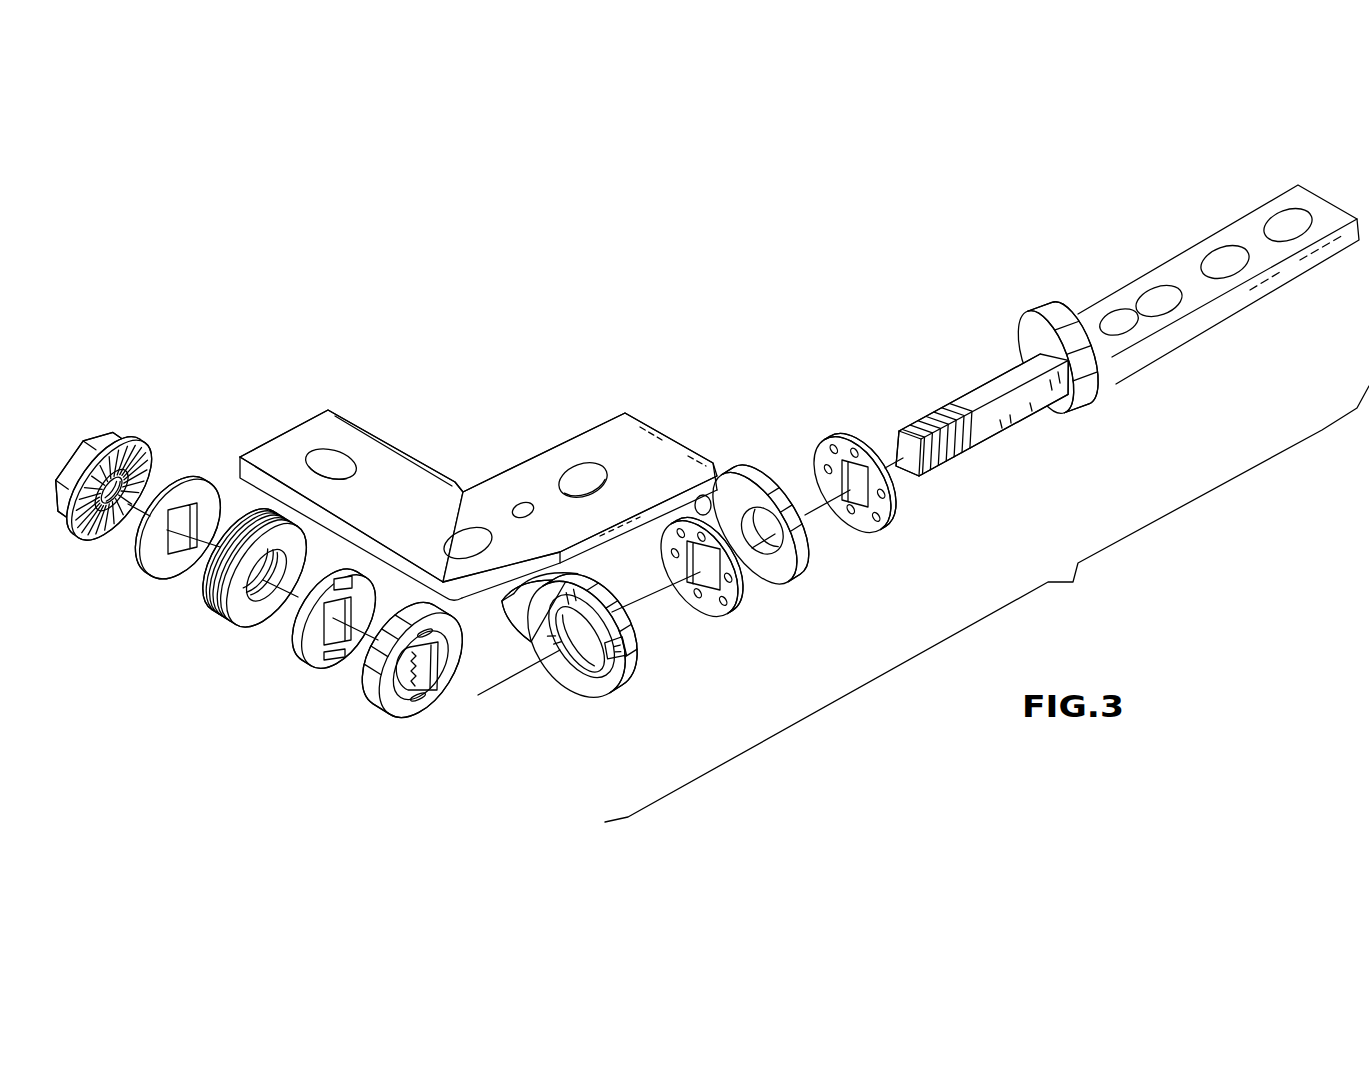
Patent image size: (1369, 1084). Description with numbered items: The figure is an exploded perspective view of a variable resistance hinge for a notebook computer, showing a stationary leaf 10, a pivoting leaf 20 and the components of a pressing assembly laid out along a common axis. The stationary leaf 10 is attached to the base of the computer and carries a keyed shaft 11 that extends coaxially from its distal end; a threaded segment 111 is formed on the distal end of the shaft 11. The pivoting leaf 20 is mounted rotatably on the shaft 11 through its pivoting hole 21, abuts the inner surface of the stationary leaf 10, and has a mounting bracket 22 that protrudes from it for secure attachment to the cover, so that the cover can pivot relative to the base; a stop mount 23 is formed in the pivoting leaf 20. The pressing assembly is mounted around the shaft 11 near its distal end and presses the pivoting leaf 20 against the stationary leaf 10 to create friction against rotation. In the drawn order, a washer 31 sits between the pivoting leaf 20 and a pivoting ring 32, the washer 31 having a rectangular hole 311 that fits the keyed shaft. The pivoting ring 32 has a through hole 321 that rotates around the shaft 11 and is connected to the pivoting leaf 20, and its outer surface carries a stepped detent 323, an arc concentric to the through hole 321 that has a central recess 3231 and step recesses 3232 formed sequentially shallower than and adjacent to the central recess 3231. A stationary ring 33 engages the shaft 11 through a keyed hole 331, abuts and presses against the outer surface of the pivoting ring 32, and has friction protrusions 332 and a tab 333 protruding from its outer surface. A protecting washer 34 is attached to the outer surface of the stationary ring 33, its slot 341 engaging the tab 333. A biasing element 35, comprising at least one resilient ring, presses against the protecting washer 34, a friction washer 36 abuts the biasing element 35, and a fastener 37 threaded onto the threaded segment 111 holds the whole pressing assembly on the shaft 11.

The stationary leaf 10 is at (1160, 262).
The shaft 11 is at (977, 385).
The threaded segment 111 is at (927, 414).
The pivoting leaf 20 is at (501, 481).
The pivoting hole 21 is at (798, 567).
The mounting bracket 22 is at (388, 443).
The stop mount 23 is at (705, 496).
The washer 31 is at (778, 549).
The rectangular hole 311 is at (707, 588).
The pivoting ring 32 is at (609, 654).
The through hole 321 is at (587, 656).
The stepped detent 323 is at (620, 667).
The central recess 3231 is at (614, 643).
The step recess 3232 is at (588, 630).
The stationary ring 33 is at (423, 617).
The keyed hole 331 is at (420, 665).
The friction protrusion 332 is at (433, 685).
The tab 333 is at (403, 608).
The protecting washer 34 is at (322, 602).
The slot 341 is at (346, 574).
The biasing element 35 is at (232, 616).
The friction washer 36 is at (168, 570).
The fastener 37 is at (95, 538).